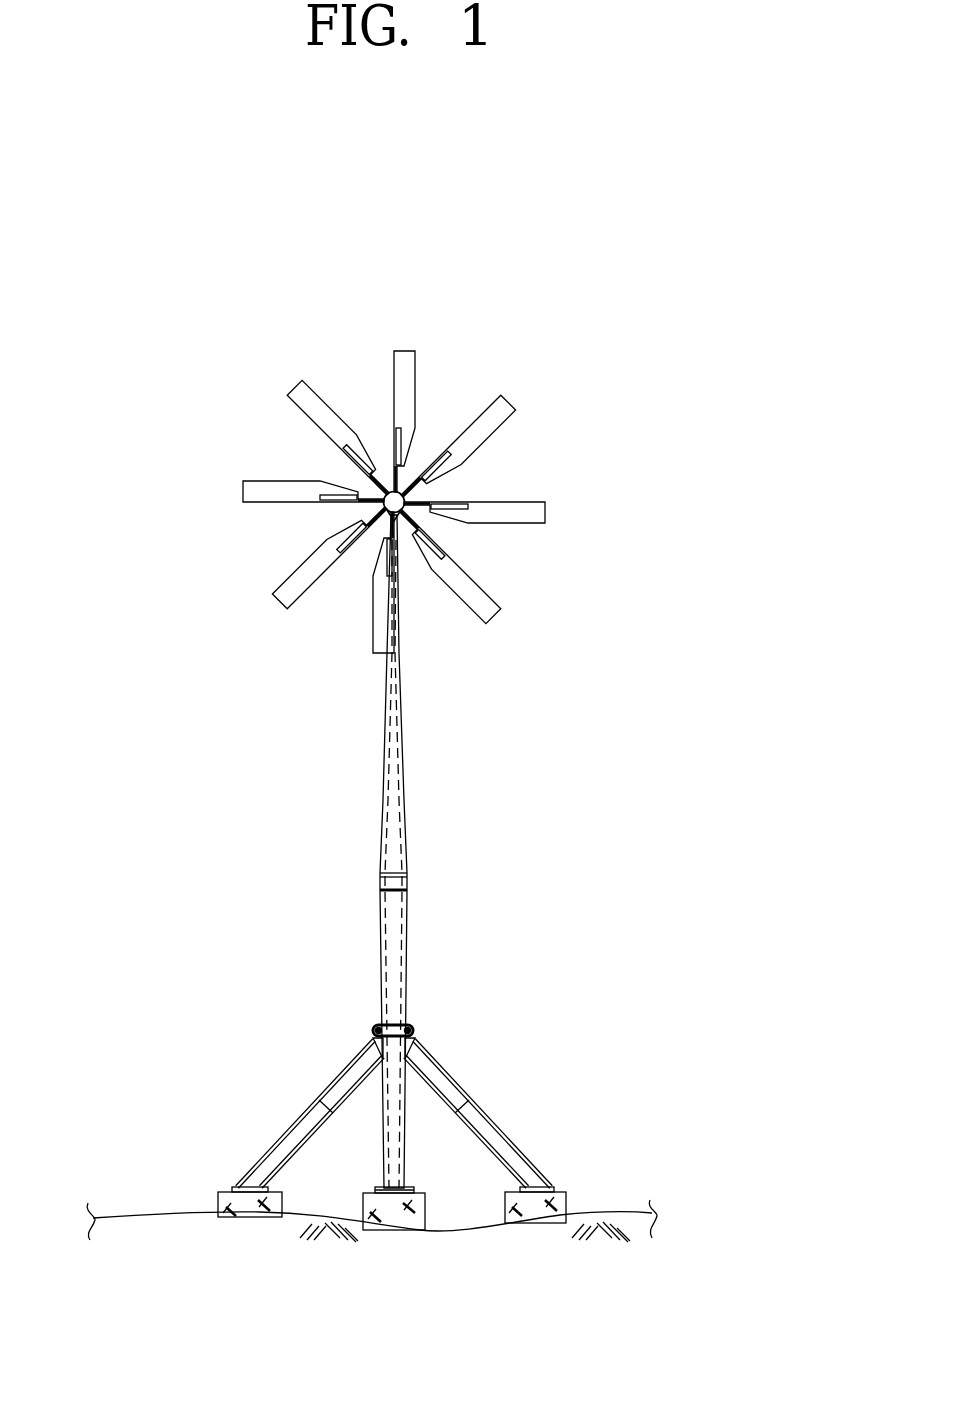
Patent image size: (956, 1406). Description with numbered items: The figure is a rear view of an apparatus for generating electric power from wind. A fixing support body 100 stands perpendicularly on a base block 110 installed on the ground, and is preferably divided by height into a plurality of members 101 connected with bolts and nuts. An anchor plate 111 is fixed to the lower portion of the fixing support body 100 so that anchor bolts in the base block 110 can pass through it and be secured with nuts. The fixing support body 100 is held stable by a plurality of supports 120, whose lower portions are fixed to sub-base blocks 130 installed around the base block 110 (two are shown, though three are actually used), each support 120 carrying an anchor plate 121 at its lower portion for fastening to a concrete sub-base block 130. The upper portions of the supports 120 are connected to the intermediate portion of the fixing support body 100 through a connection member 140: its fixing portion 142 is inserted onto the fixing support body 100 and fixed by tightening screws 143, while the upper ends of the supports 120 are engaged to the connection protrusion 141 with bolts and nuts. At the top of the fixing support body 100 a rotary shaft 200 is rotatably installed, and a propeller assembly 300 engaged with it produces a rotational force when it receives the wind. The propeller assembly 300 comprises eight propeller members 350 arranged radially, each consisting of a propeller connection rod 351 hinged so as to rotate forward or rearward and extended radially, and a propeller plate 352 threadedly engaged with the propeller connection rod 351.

The fixing support body 100 is at (414, 791).
The members 101 is at (386, 743).
The base block 110 is at (410, 1225).
The anchor plate 111 is at (378, 1189).
The supports 120 is at (313, 1108).
The anchor plate 121 is at (238, 1186).
The sub-base blocks 130 is at (248, 1217).
The connection member 140 is at (372, 1031).
The connection protrusion 141 is at (423, 1053).
The fixing portion 142 is at (405, 1026).
The screws 143 is at (385, 1023).
The rotary shaft 200 is at (381, 532).
The propeller assembly 300 is at (443, 380).
The propeller members 350 is at (565, 515).
The propeller connection rods 351 is at (452, 467).
The propeller plate 352 is at (503, 407).